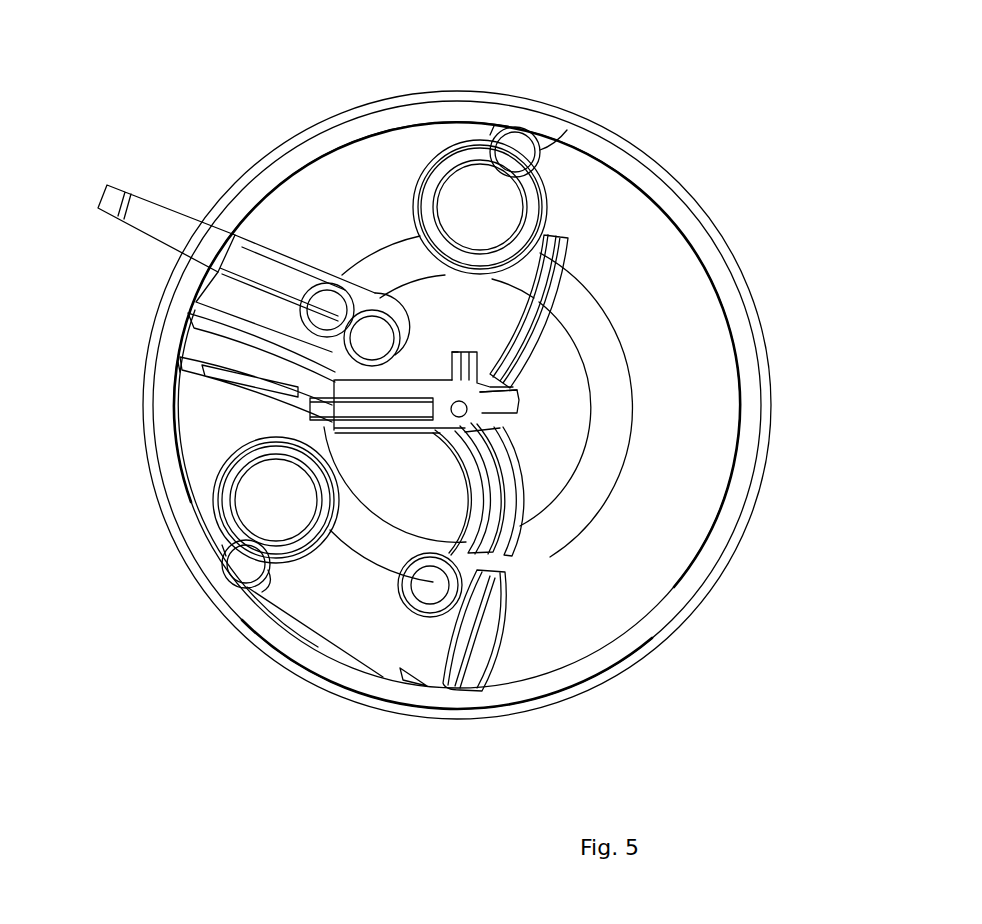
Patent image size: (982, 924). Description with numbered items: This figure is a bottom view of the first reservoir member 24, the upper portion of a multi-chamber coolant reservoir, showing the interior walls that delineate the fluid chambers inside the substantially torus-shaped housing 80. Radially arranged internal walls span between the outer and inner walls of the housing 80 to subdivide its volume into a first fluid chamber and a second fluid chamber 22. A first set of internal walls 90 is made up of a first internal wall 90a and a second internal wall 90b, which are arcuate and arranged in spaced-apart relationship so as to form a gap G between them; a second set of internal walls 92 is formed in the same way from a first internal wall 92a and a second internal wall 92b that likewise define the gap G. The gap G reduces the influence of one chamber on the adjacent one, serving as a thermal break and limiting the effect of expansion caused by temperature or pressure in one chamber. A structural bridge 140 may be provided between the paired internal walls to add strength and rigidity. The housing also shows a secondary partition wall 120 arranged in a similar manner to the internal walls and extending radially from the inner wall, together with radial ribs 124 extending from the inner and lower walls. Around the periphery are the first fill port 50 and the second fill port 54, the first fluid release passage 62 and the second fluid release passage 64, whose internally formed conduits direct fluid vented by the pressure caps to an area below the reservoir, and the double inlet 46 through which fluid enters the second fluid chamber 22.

The second fluid chamber 22 is at (690, 400).
The first reservoir member 24 is at (766, 348).
The double inlet 46 is at (158, 203).
The first fill port 50 is at (455, 165).
The second fill port 54 is at (213, 497).
The first fluid release passage 62 is at (522, 150).
The second fluid release passage 64 is at (237, 570).
The housing 80 is at (730, 250).
The first set of internal walls 90 is at (427, 677).
The first internal wall 90a is at (417, 658).
The second internal wall 90b is at (462, 662).
The second set of internal walls 92 is at (195, 326).
The first internal wall 92a is at (203, 340).
The second internal wall 92b is at (185, 355).
The secondary partition wall 120 is at (553, 262).
The radial ribs 124 is at (462, 355).
The structural bridge 140 is at (490, 560).
The gap G is at (238, 367).